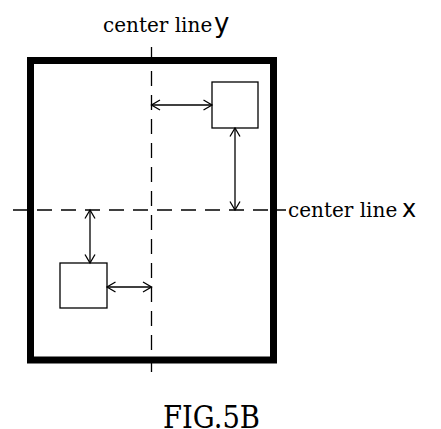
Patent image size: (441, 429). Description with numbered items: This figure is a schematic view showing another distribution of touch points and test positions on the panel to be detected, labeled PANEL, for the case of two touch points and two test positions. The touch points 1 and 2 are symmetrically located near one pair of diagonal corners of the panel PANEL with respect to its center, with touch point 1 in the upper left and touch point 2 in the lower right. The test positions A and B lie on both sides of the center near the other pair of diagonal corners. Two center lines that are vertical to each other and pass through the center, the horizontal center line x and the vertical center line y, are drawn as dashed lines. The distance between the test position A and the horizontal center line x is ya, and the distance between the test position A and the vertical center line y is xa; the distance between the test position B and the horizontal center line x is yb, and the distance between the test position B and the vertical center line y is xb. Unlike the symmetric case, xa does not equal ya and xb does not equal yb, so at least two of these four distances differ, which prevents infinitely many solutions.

The touch point 1 is at (83, 134).
The touch point 2 is at (220, 286).
The test position A is at (102, 259).
The test position B is at (205, 138).
The panel to be detected PANEL is at (152, 211).